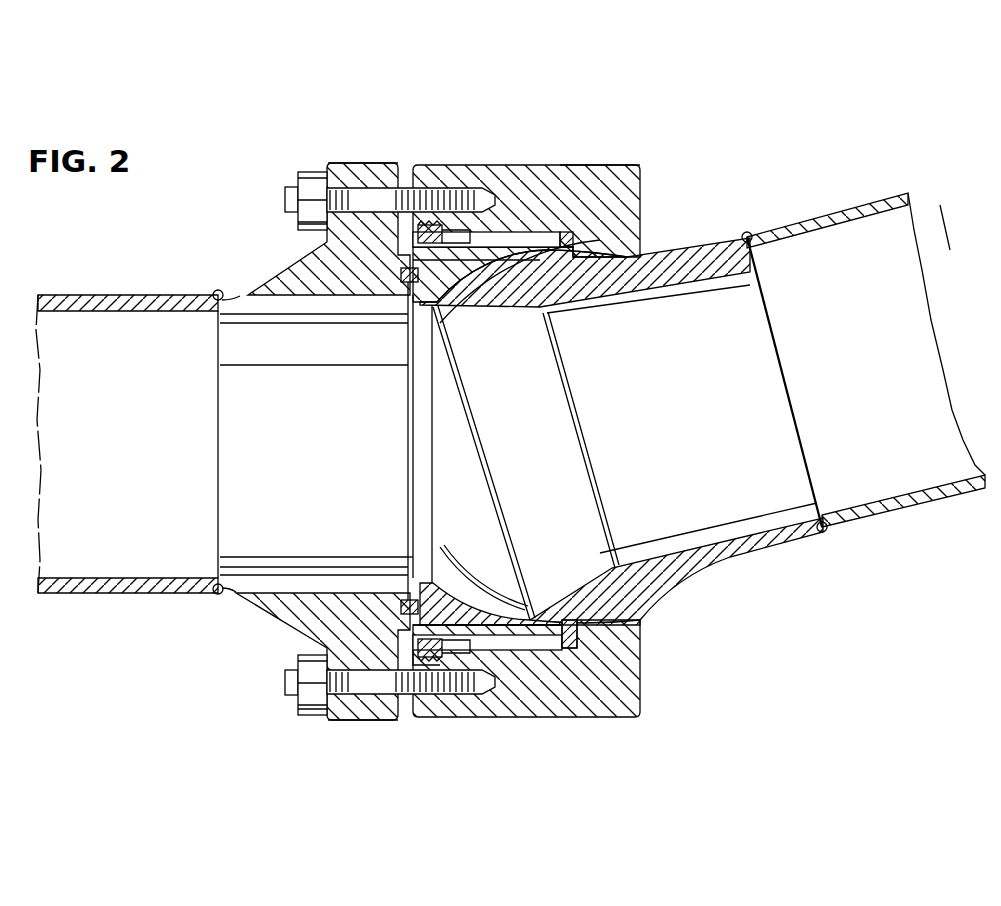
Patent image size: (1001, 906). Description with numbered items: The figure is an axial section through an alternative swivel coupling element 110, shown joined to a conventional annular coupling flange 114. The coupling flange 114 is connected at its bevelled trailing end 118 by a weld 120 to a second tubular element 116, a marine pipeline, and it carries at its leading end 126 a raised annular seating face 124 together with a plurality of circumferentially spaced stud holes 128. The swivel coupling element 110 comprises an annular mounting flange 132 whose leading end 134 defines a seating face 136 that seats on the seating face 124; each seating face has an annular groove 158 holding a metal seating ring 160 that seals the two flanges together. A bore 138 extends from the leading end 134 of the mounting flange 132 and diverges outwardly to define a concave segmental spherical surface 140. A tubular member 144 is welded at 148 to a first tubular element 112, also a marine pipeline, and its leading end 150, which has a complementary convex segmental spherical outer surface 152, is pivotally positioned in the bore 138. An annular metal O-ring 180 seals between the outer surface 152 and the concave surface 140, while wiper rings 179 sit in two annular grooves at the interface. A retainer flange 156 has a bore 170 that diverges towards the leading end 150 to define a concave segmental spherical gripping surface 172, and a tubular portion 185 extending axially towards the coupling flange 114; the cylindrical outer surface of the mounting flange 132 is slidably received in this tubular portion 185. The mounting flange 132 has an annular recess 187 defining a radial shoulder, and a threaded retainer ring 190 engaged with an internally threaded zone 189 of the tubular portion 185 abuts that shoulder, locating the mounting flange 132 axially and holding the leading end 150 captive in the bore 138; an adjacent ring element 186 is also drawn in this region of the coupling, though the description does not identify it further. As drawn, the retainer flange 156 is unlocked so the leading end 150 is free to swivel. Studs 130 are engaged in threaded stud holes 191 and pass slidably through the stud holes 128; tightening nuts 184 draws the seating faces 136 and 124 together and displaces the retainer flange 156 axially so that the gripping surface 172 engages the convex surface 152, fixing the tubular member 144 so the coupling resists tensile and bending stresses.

The swivel coupling element 110 is at (783, 617).
The first tubular element 112 is at (882, 518).
The annular coupling flange 114 is at (360, 172).
The second tubular element 116 is at (93, 582).
The trailing end 118 is at (236, 585).
The weld 120 is at (212, 592).
The seating face 124 is at (392, 314).
The leading end 126 is at (400, 556).
The stud holes 128 is at (320, 238).
The studs 130 is at (285, 200).
The annular mounting flange 132 is at (515, 225).
The leading end 134 is at (466, 560).
The seating face 136 is at (414, 318).
The bore 138 is at (432, 554).
The concave segmental spherical surface 140 is at (497, 560).
The tubular member 144 is at (774, 553).
The weld 148 is at (830, 530).
The leading end 150 is at (463, 330).
The convex segmental spherical outer surface 152 is at (576, 292).
The retainer flange 156 is at (626, 712).
The annular groove 158 is at (413, 634).
The metal seating ring 160 is at (405, 600).
The bore 170 is at (640, 622).
The concave segmental spherical gripping surface 172 is at (640, 653).
The wiper rings 179 is at (448, 340).
The annular metal O-ring 180 is at (470, 312).
The nuts 184 is at (306, 172).
The tubular portion 185 is at (547, 167).
The retaining ring 186 is at (528, 240).
The annular recess 187 is at (474, 232).
The internally threaded zone 189 is at (428, 226).
The threaded retainer ring 190 is at (426, 668).
The threaded stud holes 191 is at (441, 226).